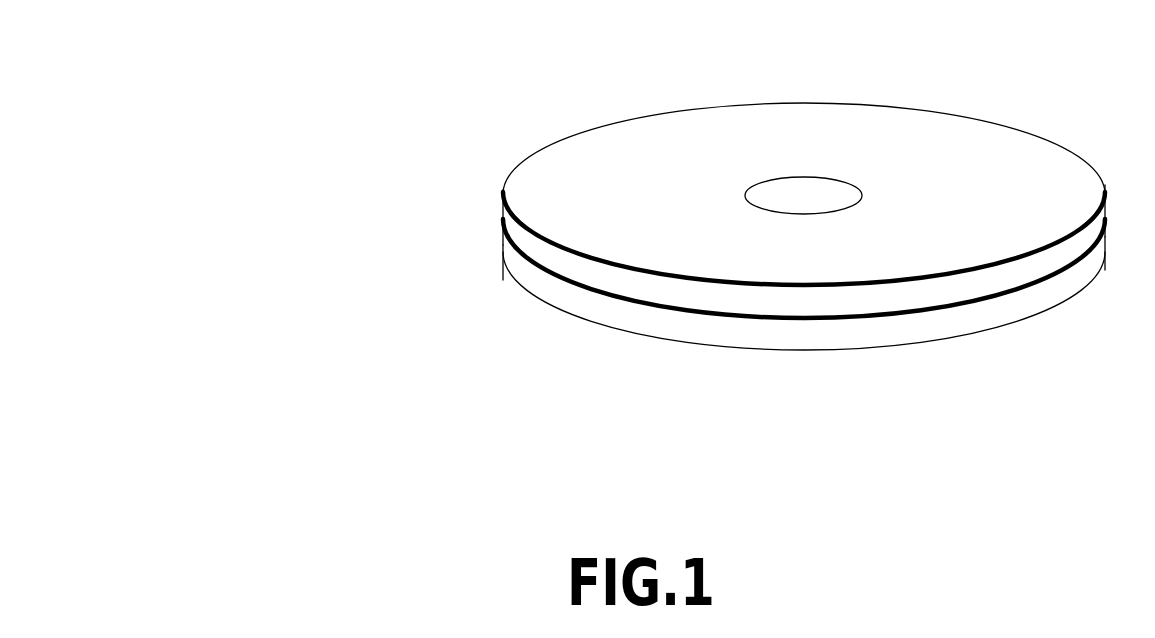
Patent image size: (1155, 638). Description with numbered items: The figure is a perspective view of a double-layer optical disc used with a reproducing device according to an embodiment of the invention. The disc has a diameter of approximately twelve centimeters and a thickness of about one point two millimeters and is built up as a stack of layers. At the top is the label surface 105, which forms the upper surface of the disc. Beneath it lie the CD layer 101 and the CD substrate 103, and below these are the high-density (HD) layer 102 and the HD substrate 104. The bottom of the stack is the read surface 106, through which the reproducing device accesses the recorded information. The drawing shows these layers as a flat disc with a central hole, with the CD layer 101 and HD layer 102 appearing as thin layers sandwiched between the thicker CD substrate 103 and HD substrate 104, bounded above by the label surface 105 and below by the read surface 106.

The CD layer 101 is at (587, 265).
The high-density (HD) layer 102 is at (647, 312).
The CD substrate 103 is at (523, 240).
The HD substrate 104 is at (517, 276).
The label surface 105 is at (824, 143).
The read surface 106 is at (850, 350).